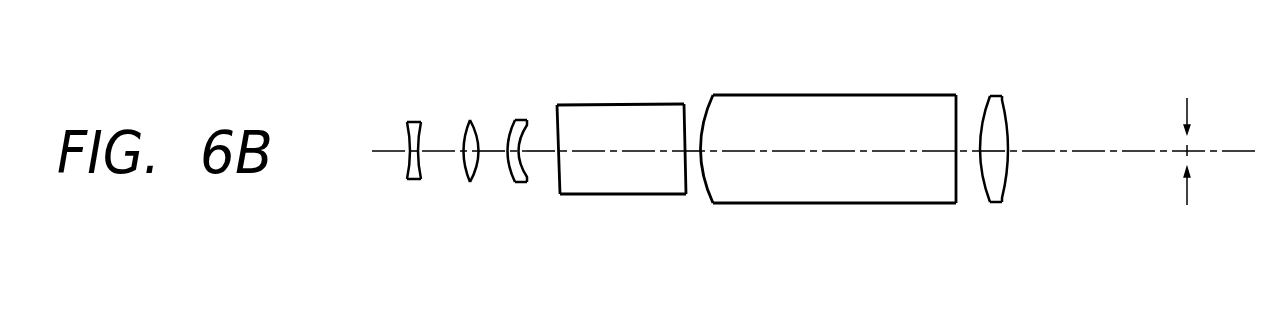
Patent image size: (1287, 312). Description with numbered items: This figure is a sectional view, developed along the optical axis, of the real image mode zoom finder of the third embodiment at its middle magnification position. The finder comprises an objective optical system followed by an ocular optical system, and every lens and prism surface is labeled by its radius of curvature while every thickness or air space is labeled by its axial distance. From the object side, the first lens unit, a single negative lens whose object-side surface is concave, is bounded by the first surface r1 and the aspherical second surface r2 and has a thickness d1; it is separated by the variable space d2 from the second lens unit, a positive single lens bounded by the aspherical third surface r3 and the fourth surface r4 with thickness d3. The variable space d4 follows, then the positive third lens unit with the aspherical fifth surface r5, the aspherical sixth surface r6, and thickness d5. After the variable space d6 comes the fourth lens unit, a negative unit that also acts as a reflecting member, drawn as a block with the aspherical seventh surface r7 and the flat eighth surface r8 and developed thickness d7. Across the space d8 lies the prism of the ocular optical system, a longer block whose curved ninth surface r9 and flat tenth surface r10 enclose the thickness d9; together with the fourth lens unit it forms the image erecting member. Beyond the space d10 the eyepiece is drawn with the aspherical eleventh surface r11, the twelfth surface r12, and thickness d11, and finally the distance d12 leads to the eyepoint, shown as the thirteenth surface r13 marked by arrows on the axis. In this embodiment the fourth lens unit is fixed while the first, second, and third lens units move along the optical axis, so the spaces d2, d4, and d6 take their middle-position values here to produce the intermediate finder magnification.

The radius of curvature of the first surface r1 is at (407, 139).
The radius of curvature of the second surface r2 is at (419, 141).
The radius of curvature of the third surface r3 is at (465, 137).
The radius of curvature of the fourth surface r4 is at (476, 129).
The radius of curvature of the fifth surface r5 is at (510, 133).
The radius of curvature of the sixth surface r6 is at (524, 134).
The radius of curvature of the seventh surface r7 is at (557, 129).
The radius of curvature of the eighth surface r8 is at (685, 117).
The radius of curvature of the ninth surface r9 is at (703, 114).
The radius of curvature of the tenth surface r10 is at (957, 111).
The radius of curvature of the eleventh surface r11 is at (986, 106).
The radius of curvature of the twelfth surface r12 is at (1006, 121).
The eyepoint r13 is at (1187, 103).
The thickness of the first lens unit d1 is at (411, 162).
The space between the first and second lens units d2 is at (439, 153).
The thickness of the second lens unit d3 is at (469, 181).
The space between the second and third lens units d4 is at (495, 152).
The thickness of the third lens unit d5 is at (522, 181).
The space between the third and fourth lens units d6 is at (541, 152).
The thickness of the fourth lens unit d7 is at (614, 152).
The space between the fourth lens unit and the prism d8 is at (691, 152).
The thickness of the prism d9 is at (847, 152).
The space between the prism and the eyepiece d10 is at (966, 152).
The thickness of the eyepiece d11 is at (993, 153).
The space between the eyepiece and the eyepoint d12 is at (1097, 152).